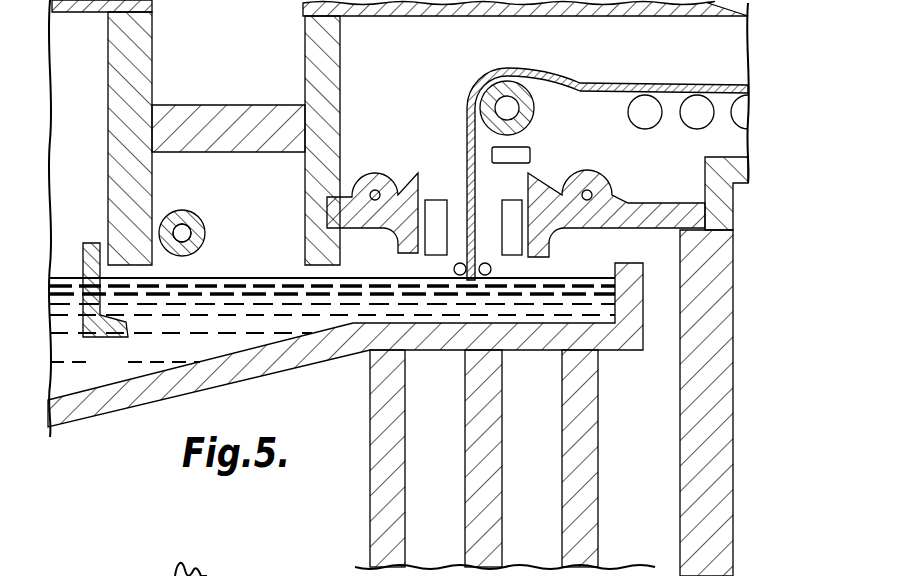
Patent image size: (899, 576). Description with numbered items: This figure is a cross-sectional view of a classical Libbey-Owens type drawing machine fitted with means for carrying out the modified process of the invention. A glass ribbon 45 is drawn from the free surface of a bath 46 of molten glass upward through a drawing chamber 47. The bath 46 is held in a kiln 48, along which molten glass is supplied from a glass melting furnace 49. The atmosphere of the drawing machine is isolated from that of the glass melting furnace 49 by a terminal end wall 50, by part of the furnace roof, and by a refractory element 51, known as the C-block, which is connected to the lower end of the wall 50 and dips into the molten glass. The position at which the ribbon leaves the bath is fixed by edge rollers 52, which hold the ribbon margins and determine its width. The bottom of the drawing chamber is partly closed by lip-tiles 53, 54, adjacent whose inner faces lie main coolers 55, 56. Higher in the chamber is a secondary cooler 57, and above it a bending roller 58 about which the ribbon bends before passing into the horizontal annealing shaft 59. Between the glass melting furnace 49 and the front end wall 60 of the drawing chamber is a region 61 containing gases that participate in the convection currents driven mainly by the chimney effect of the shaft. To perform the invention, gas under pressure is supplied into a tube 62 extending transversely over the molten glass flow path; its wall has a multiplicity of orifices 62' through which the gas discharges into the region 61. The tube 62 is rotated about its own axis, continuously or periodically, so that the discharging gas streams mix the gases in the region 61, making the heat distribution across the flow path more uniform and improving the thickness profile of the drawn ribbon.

The glass ribbon 45 is at (469, 138).
The bath of molten glass 46 is at (419, 319).
The drawing chamber 47 is at (419, 77).
The kiln 48 is at (548, 335).
The glass melting furnace 49 is at (91, 134).
The terminal end wall 50 is at (128, 72).
The refractory element (C-block) 51 is at (84, 243).
The edge rollers 52 is at (454, 268).
The lip-tile 53 is at (361, 190).
The lip-tile 54 is at (570, 185).
The main cooler 55 is at (435, 218).
The main cooler 56 is at (514, 220).
The secondary cooler 57 is at (520, 153).
The bending roller 58 is at (533, 103).
The horizontal annealing shaft 59 is at (738, 57).
The front end wall of the drawing chamber 60 is at (322, 128).
The region containing gases 61 is at (266, 191).
The tube 62 is at (212, 233).
The orifices 62' is at (181, 204).